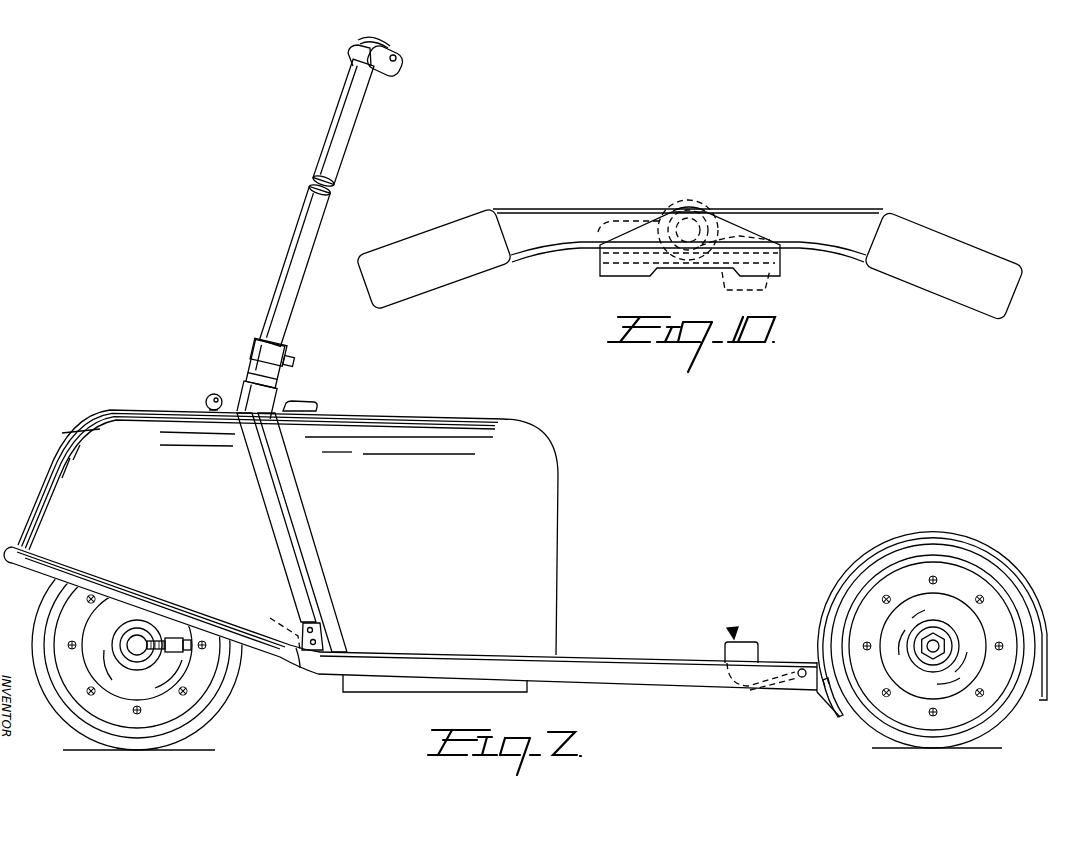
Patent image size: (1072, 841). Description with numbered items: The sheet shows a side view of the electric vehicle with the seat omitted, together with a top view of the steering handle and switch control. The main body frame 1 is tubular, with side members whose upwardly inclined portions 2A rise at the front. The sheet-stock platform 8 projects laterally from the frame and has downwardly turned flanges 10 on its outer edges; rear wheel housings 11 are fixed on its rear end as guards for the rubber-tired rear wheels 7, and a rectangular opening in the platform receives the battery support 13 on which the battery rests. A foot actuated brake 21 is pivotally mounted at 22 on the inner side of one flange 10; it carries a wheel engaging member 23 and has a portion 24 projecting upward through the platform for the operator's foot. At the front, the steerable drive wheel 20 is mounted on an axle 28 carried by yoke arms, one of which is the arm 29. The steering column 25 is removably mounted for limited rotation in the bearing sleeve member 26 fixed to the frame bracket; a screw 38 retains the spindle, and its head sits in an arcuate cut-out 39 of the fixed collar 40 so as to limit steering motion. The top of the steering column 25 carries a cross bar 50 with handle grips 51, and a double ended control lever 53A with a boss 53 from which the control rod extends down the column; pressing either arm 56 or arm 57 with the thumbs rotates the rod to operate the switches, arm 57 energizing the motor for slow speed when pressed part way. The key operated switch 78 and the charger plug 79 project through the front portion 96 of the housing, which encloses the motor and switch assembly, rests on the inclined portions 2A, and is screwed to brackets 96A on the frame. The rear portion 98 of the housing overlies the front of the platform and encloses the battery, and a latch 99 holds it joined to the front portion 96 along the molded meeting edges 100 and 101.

In FIG. 2, the main body frame 1 is at (300, 668).
In FIG. 2, the upwardly inclined portions 2A is at (126, 597).
In FIG. 2, the rear wheels 7 is at (956, 566).
In FIG. 2, the platform 8 is at (599, 656).
In FIG. 2, the downwardly turned flanges 10 is at (656, 681).
In FIG. 2, the rear wheel housings 11 is at (1012, 562).
In FIG. 2, the battery support 13 is at (398, 692).
In FIG. 2, the drive wheel 20 is at (205, 716).
In FIG. 2, the foot actuated brake 21 is at (733, 632).
In FIG. 2, the pivot 22 is at (800, 668).
In FIG. 2, the wheel engaging member 23 is at (838, 708).
In FIG. 2, the upwardly projecting portion 24 is at (726, 656).
In FIG. 2, the steering column 25 is at (290, 276).
In FIG. 2, the bearing sleeve member 26 is at (246, 397).
In FIG. 2, the axle 28 is at (132, 645).
In FIG. 2, the yoke arm 29 is at (160, 658).
In FIG. 2, the screw 38 is at (296, 365).
In FIG. 2, the arcuate cut-out 39 is at (258, 348).
In FIG. 2, the fixed collar 40 is at (246, 366).
In FIG. 2, the cross bar 50 is at (352, 55).
In FIG. 10, the cross bar 50 is at (539, 212).
In FIG. 2, the handle grips 51 is at (398, 72).
In FIG. 10, the handle grips 51 is at (470, 232).
In FIG. 10, the boss 53 is at (694, 216).
In FIG. 2, the double ended control lever 53A is at (388, 40).
In FIG. 10, the double ended control lever 53A is at (748, 232).
In FIG. 10, the arm 56 is at (603, 277).
In FIG. 10, the arm 57 is at (782, 278).
In FIG. 2, the key operated switch 78 is at (206, 400).
In FIG. 2, the female plug 79 is at (208, 412).
In FIG. 2, the front portion of housing 96 is at (90, 436).
In FIG. 2, the brackets 96A is at (267, 621).
In FIG. 2, the rear portion of housing 98 is at (480, 440).
In FIG. 2, the latch 99 is at (316, 404).
In FIG. 2, the molded meeting edge 100 is at (290, 563).
In FIG. 2, the molded meeting edge 101 is at (308, 556).